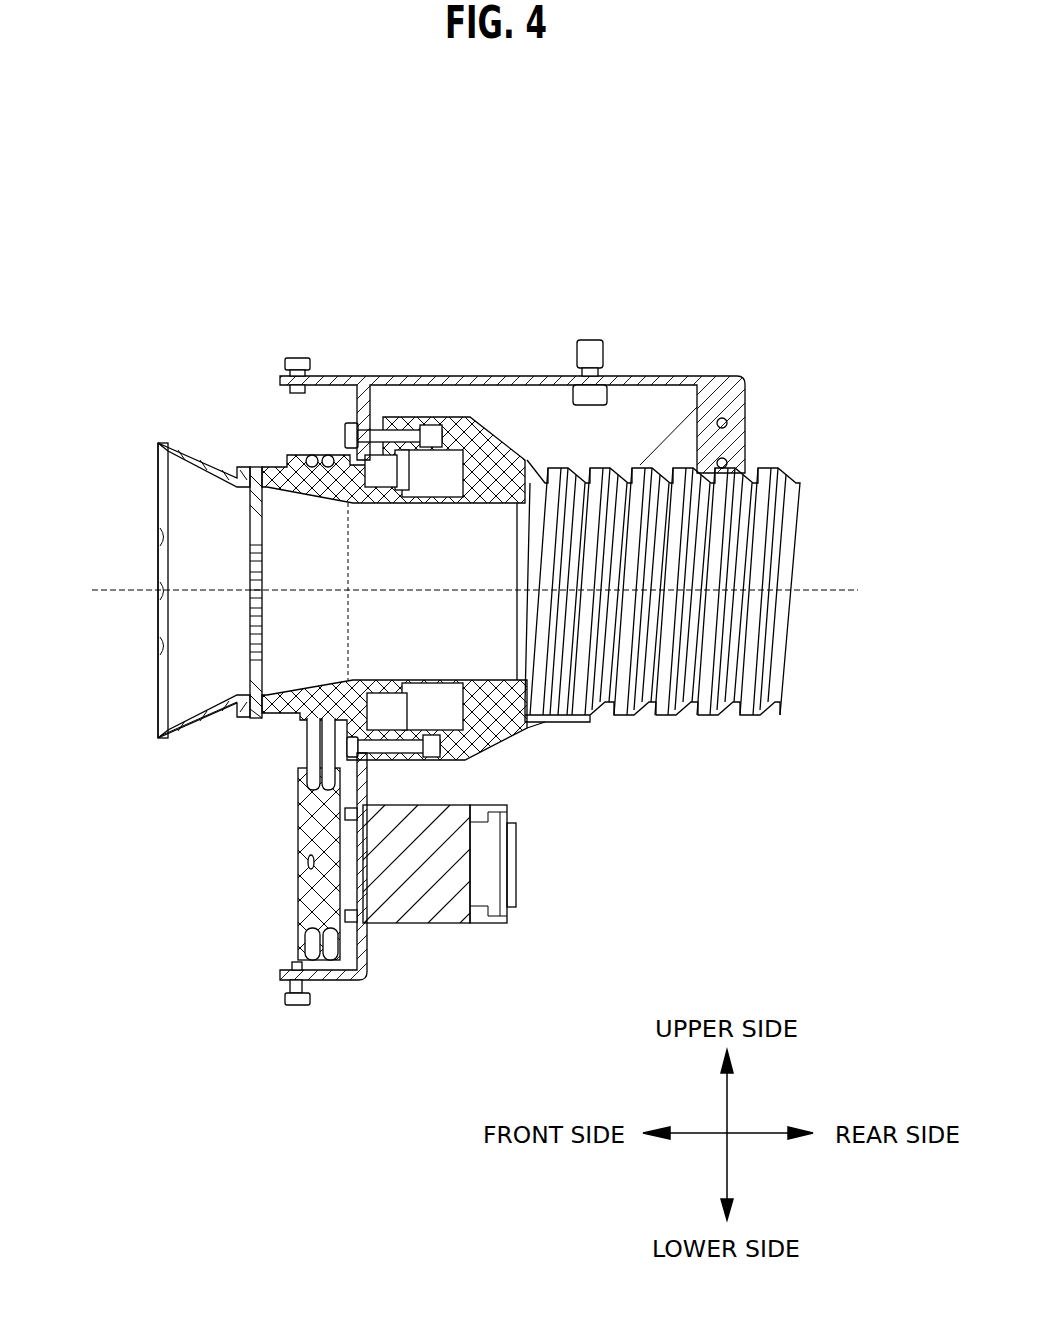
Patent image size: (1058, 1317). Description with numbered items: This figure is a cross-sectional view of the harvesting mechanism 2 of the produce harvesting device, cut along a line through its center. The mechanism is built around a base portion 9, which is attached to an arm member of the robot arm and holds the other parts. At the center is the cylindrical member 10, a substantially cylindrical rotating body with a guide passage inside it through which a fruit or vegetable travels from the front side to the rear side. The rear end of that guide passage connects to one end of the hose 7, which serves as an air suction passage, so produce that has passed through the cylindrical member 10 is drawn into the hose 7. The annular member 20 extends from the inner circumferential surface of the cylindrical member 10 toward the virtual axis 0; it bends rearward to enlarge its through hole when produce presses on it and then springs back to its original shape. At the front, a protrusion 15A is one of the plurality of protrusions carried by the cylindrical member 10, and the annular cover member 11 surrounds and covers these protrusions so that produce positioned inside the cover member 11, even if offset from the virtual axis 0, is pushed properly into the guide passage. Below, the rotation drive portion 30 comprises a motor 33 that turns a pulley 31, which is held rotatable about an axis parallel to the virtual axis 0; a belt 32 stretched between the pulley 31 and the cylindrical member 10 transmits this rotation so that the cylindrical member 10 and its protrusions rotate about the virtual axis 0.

The harvesting mechanism 2 is at (482, 212).
The virtual axis 0 is at (463, 592).
The hose 7 is at (665, 707).
The base portion 9 is at (496, 378).
The cylindrical member 10 is at (263, 447).
The cover member 11 is at (186, 740).
The protrusion 15A is at (158, 547).
The annular member 20 is at (235, 517).
The rotation drive portion 30 is at (278, 907).
The pulley 31 is at (316, 827).
The belt 32 is at (292, 745).
The motor 33 is at (411, 915).